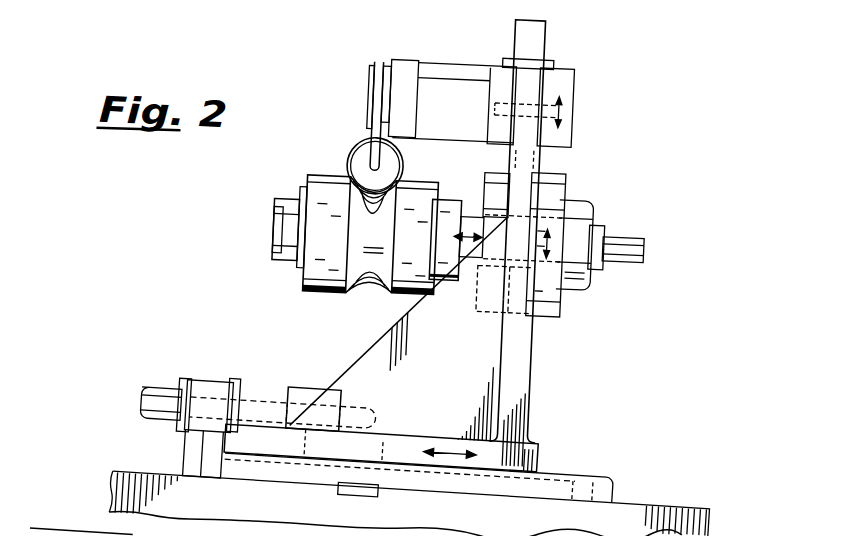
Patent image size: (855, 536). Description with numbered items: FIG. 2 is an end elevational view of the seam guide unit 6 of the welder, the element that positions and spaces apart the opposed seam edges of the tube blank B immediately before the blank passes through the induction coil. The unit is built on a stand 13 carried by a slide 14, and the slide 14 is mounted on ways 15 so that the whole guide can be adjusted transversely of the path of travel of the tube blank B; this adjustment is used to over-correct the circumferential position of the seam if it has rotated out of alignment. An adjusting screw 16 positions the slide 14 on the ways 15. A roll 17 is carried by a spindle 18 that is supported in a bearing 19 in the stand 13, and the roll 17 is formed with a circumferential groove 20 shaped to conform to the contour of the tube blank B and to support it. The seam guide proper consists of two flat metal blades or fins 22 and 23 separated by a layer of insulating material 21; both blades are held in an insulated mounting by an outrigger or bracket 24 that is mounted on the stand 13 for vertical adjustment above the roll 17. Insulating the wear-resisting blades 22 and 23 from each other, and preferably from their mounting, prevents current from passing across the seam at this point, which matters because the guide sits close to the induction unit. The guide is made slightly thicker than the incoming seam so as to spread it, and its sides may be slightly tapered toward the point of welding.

The seam guide unit 6 is at (537, 45).
The stand 13 is at (535, 373).
The slide 14 is at (553, 450).
The ways 15 is at (632, 475).
The adjusting screw 16 is at (273, 416).
The roll 17 is at (321, 301).
The spindle 18 is at (272, 242).
The bearing 19 is at (556, 178).
The circumferential groove 20 is at (374, 292).
The layer of insulating material 21 is at (371, 68).
The blade 22 is at (364, 151).
The blade 23 is at (400, 173).
The outrigger or bracket 24 is at (427, 66).
The tube blank B is at (344, 170).